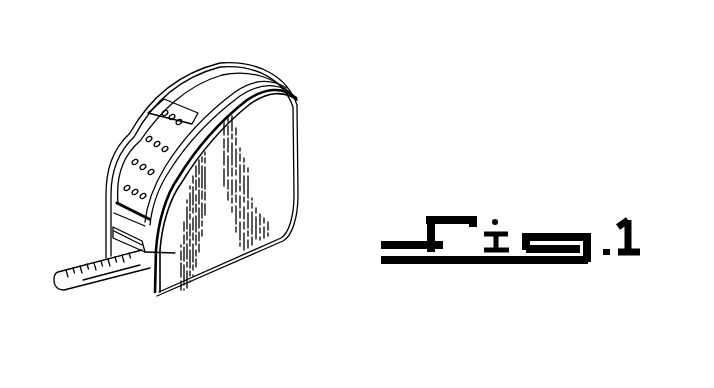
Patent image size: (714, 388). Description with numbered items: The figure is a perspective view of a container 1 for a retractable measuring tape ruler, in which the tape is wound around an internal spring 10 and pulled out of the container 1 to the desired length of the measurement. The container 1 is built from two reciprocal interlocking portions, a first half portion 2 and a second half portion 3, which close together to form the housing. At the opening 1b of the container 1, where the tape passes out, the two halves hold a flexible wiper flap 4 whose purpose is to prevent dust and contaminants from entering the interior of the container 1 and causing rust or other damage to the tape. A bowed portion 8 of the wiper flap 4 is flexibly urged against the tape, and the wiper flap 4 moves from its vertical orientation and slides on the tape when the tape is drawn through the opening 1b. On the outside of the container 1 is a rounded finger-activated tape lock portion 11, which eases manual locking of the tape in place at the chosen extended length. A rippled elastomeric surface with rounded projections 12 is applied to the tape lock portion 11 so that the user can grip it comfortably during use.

The container 1 is at (166, 71).
The opening 1b is at (153, 254).
The first half portion 2 is at (127, 138).
The second half portion 3 is at (299, 101).
The wiper flap 4 is at (112, 230).
The bowed portion 8 is at (140, 248).
The internal spring 10 is at (83, 280).
The finger-activated tape lock portion 11 is at (128, 153).
The rounded projections 12 is at (160, 113).